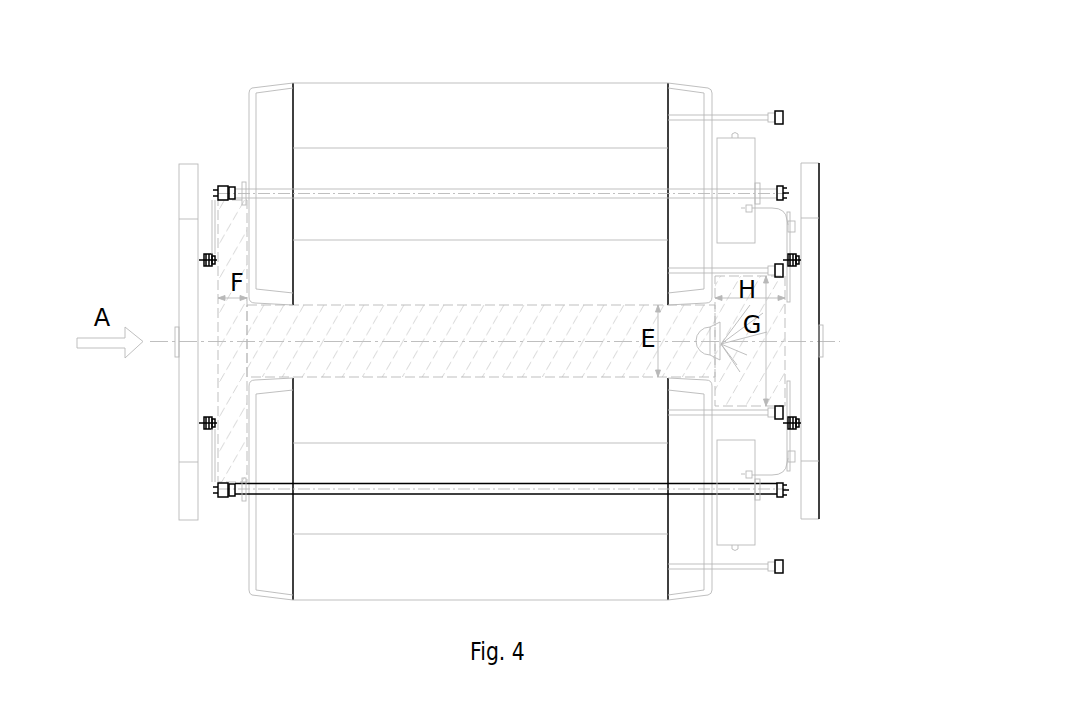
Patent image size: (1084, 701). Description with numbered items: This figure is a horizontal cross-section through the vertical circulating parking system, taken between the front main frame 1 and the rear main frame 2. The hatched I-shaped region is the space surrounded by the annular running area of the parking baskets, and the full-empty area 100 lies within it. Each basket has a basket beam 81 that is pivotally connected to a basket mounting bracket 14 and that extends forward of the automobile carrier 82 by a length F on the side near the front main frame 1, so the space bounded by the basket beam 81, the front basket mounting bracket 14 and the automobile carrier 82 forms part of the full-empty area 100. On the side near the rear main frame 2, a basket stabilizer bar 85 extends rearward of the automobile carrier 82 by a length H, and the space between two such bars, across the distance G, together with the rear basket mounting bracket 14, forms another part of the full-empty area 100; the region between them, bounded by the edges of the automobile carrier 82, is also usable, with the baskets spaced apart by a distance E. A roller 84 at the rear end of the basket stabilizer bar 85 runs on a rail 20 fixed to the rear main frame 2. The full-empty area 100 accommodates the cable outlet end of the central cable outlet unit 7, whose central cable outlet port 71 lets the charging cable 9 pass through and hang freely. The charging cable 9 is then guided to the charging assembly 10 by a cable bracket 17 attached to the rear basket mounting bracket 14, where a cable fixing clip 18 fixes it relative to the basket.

The front main frame 1 is at (185, 255).
The rear main frame 2 is at (812, 257).
The central cable outlet unit 7 is at (806, 336).
The central cable outlet port 71 is at (724, 344).
The charging cable 9 is at (788, 472).
The charging assembly 10 is at (750, 510).
The basket mounting bracket 14 is at (213, 460).
The cable bracket 17 is at (788, 410).
The cable fixing clip 18 is at (795, 457).
The rail 20 is at (784, 117).
The basket beam 81 is at (232, 190).
The automobile carrier 82 is at (620, 115).
The roller 84 is at (779, 112).
The basket stabilizer bar 85 is at (752, 112).
The full-empty area 100 is at (738, 335).